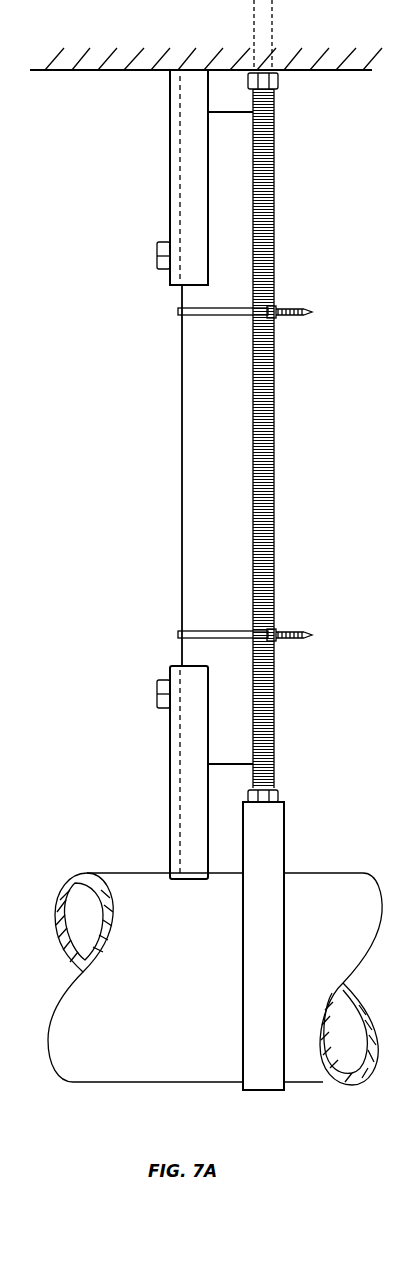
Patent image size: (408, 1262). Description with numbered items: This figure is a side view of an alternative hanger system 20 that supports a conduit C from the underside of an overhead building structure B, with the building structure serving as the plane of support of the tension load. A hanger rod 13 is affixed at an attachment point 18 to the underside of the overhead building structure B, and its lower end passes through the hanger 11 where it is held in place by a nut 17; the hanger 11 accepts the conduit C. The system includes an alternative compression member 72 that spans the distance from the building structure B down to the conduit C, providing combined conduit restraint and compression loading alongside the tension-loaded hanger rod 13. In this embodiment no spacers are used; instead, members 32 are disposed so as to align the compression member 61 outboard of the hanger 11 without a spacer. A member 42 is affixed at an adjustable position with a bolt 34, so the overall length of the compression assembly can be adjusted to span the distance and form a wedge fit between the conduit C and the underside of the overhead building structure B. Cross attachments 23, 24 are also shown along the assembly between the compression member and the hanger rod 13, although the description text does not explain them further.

The overhead building structure B is at (140, 72).
The hanger rod 13 is at (273, 413).
The attachment point 18 is at (280, 74).
The hanger system 20 is at (326, 182).
The member 32 is at (170, 104).
The bolt 34 is at (157, 256).
The compression member 61 is at (182, 465).
The first cross bar screw 23 is at (276, 303).
The second cross bar screw 24 is at (276, 627).
The member 42 is at (178, 843).
The nut 17 is at (272, 790).
The hanger 11 is at (285, 826).
The conduit C is at (322, 880).
The compression member 72 is at (102, 532).